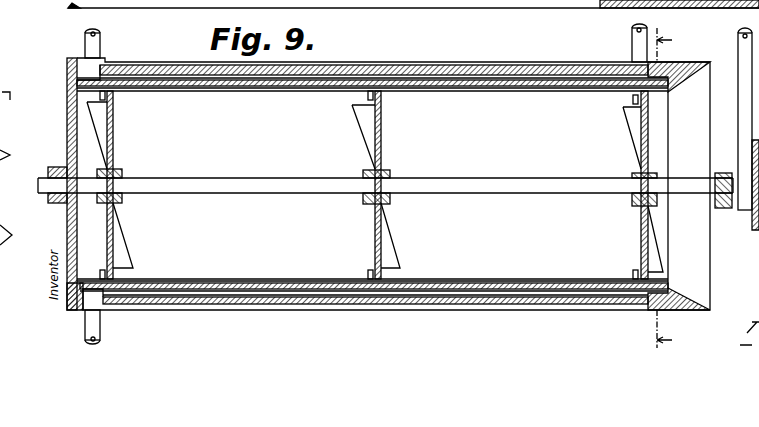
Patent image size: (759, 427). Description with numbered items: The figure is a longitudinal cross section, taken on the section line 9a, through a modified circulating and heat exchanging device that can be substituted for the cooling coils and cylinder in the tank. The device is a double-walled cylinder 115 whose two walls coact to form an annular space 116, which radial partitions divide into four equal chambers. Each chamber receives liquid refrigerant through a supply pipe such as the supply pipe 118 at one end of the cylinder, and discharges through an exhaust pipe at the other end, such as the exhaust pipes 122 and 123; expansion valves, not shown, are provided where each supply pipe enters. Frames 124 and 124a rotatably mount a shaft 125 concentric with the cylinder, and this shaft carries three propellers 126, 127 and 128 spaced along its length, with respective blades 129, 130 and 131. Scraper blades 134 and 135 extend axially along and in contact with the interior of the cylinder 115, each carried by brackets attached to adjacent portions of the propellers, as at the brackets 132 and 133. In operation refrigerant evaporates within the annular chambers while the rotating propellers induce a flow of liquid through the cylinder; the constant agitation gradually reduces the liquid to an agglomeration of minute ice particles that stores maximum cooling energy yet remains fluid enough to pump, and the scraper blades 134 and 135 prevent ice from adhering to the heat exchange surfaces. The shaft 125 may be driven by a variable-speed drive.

The double-walled cylinder 115 is at (215, 310).
The annular space 116 is at (433, 294).
The supply pipe 118 is at (632, 41).
The exhaust pipe 122 is at (100, 38).
The exhaust pipe 123 is at (100, 327).
The frame 124 is at (67, 135).
The frame 124a is at (723, 209).
The shaft 125 is at (201, 184).
The propeller 126 is at (113, 128).
The propeller 127 is at (382, 128).
The propeller 128 is at (648, 126).
The blade 129 is at (123, 243).
The blade 130 is at (391, 243).
The blade 131 is at (641, 247).
The bracket 132 is at (633, 101).
The bracket 133 is at (633, 275).
The scraper blade 134 is at (470, 93).
The scraper blade 135 is at (498, 279).
The section line 9a is at (673, 188).